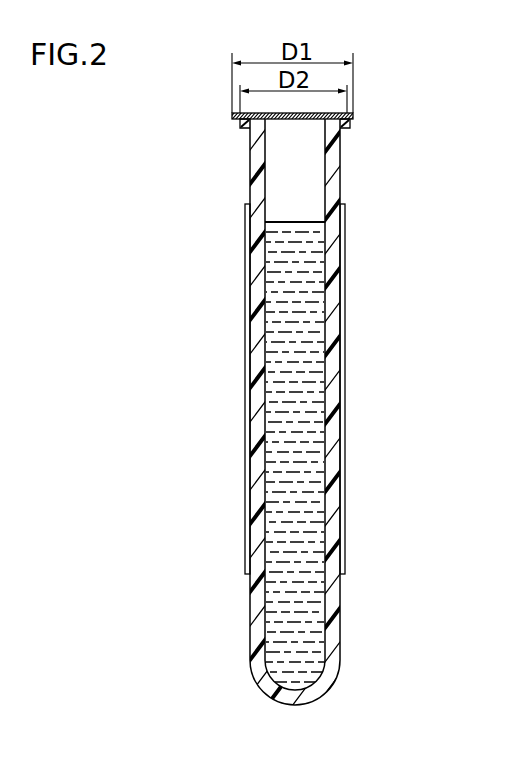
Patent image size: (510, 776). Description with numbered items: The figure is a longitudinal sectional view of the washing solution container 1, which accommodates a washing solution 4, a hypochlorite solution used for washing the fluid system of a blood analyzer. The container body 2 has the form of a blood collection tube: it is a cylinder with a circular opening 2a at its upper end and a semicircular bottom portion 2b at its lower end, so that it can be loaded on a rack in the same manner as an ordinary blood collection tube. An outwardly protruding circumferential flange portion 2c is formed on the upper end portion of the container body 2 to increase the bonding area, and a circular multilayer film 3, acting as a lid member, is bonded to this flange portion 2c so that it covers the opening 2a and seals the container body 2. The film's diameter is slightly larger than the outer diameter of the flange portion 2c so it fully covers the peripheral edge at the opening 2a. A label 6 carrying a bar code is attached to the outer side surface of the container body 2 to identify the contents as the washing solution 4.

The washing solution container 1 is at (384, 87).
The container body 2 is at (340, 178).
The opening 2a is at (266, 127).
The bottom portion 2b is at (320, 700).
The flange portion 2c is at (240, 128).
The multilayer film 3 is at (278, 112).
The washing solution 4 is at (298, 223).
The label 6 is at (246, 352).